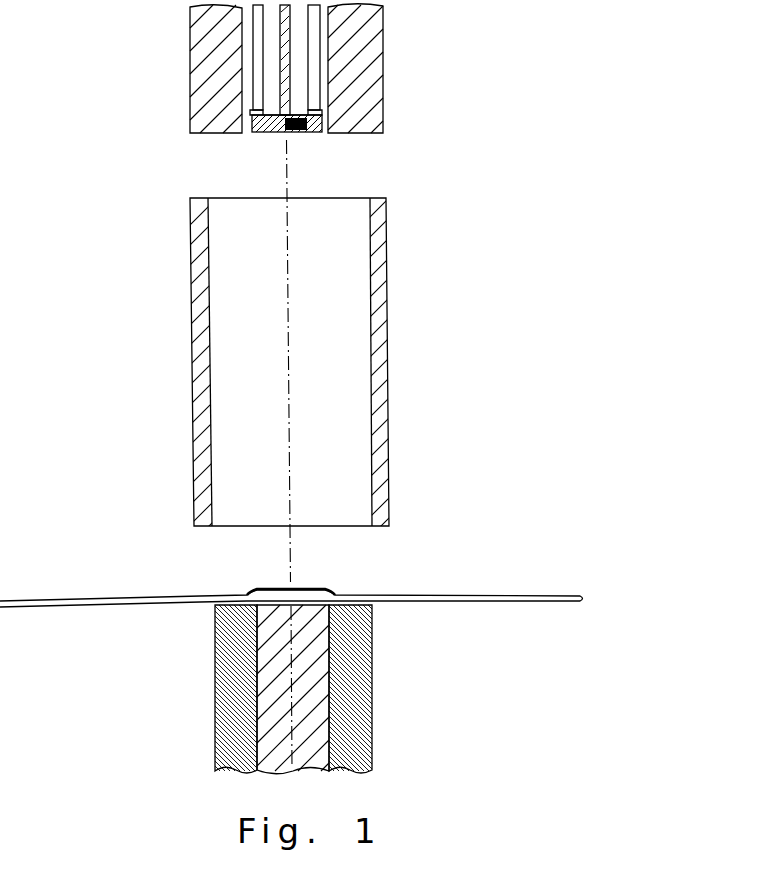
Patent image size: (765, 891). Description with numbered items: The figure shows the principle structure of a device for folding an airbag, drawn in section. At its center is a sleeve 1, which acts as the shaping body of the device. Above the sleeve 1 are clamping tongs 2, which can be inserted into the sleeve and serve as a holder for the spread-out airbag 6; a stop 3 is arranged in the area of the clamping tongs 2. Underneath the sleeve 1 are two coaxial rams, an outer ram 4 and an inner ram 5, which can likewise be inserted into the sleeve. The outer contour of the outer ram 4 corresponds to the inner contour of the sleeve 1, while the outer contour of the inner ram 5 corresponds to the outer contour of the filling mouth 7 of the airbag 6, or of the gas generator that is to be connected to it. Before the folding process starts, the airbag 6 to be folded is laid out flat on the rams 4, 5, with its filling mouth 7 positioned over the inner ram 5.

The sleeve 1 is at (381, 282).
The clamping tongs 2 is at (258, 135).
The stop 3 is at (200, 72).
The outer ram 4 is at (372, 660).
The inner ram 5 is at (310, 697).
The airbag 6 is at (573, 605).
The filling mouth 7 is at (325, 590).